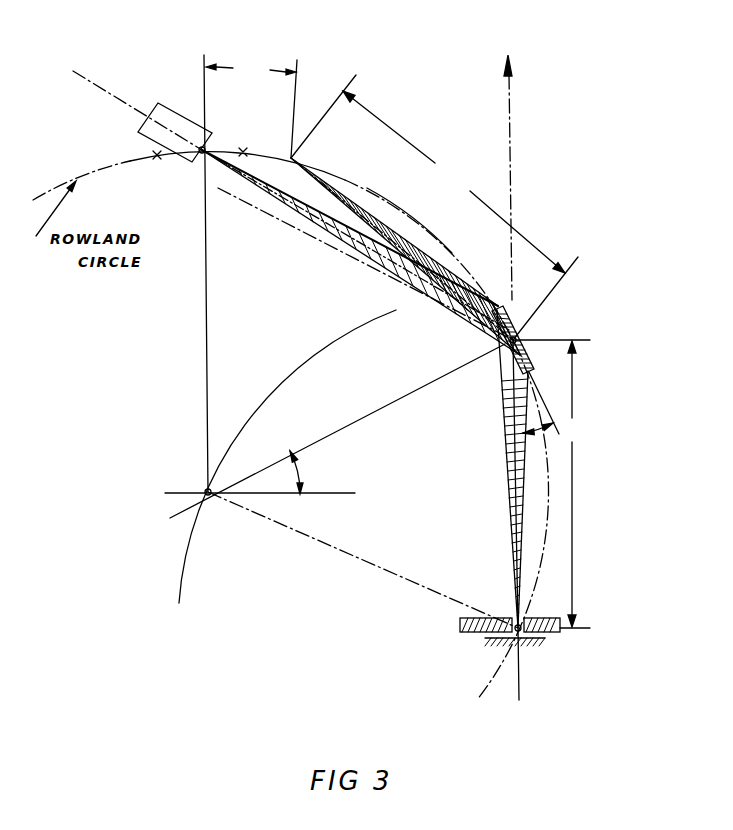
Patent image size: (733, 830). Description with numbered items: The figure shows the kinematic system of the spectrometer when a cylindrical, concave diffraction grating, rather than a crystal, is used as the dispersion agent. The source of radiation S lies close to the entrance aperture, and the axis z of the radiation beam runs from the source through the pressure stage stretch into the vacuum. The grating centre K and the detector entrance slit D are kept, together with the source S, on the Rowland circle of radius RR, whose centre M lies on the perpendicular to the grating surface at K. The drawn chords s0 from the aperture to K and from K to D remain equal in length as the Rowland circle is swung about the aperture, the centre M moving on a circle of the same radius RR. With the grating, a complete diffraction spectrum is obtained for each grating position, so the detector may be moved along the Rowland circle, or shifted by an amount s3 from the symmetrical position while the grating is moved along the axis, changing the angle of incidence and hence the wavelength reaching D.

The entrance slit of the radiation detector D is at (200, 153).
The centre of the diffraction crystal K is at (520, 335).
The centre of the Rowland circle M is at (260, 480).
The source of radiation S is at (535, 646).
The axis of the radiation beam z is at (509, 364).
The distance source-crystal / crystal-detector s0 is at (440, 351).
The shift of the detector s3 is at (251, 106).
The radius of the Rowland circle RR is at (344, 341).